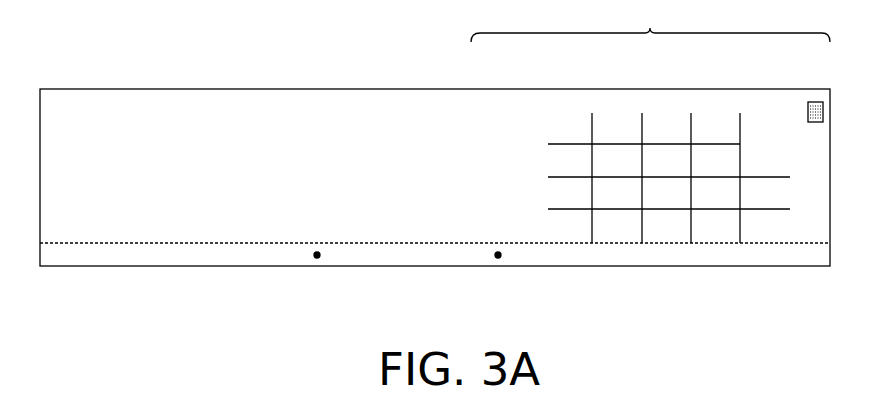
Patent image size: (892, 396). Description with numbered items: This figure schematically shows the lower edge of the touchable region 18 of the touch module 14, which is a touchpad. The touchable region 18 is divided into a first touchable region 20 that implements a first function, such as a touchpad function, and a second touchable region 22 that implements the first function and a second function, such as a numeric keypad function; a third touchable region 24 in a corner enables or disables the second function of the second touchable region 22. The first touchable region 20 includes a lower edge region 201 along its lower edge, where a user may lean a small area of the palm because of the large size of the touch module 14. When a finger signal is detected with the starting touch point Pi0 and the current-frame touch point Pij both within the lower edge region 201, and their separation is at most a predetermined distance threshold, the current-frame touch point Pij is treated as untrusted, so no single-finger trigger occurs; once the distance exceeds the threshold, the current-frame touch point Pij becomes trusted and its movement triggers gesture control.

The touch module 14 is at (368, 89).
The touchable region 18 is at (650, 22).
The first touchable region 20 is at (485, 107).
The second touchable region 22 is at (680, 158).
The third touchable region 24 is at (816, 100).
The lower edge region 201 is at (787, 252).
The starting touch point Pi0 is at (317, 258).
The current-frame touch point Pij is at (498, 258).